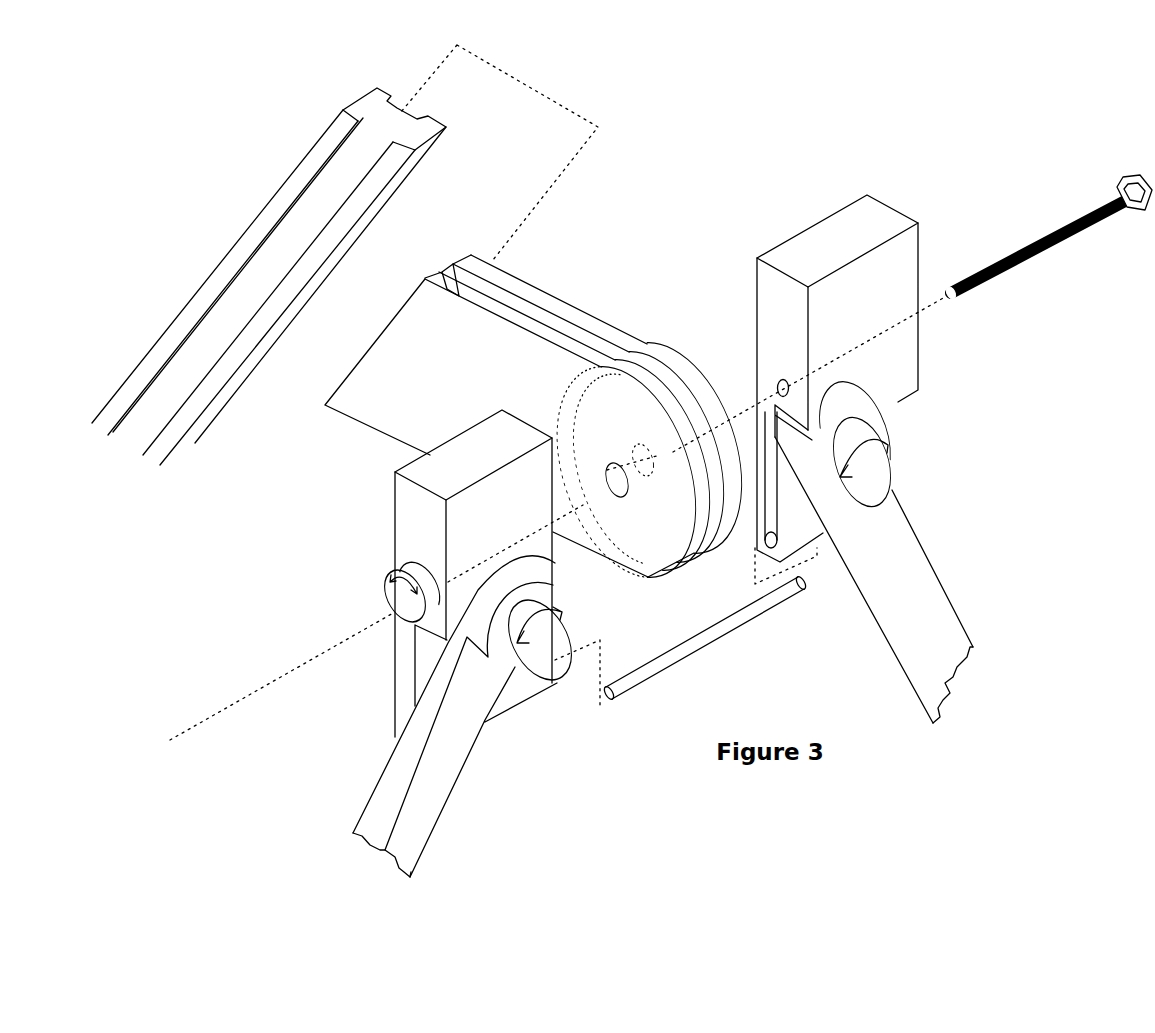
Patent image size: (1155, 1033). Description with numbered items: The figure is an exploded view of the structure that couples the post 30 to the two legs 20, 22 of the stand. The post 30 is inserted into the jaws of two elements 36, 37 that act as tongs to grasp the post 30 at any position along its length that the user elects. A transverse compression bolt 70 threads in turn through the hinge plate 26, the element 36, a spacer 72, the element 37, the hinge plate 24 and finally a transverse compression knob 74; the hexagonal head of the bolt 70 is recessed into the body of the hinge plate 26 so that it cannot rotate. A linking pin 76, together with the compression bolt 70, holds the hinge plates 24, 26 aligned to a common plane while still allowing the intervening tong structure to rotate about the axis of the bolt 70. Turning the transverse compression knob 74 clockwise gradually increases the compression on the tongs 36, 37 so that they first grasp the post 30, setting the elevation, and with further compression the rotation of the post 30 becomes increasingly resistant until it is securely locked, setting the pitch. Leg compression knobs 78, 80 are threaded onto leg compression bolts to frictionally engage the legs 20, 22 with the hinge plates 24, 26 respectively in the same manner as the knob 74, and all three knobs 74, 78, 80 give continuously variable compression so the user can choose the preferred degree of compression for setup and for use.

The leg 20 is at (408, 768).
The leg 22 is at (908, 567).
The hinge plate 24 is at (438, 482).
The hinge plate 26 is at (877, 225).
The post 30 is at (375, 102).
The element (tong) 36 is at (525, 290).
The element (tong) 37 is at (537, 342).
The transverse compression bolt 70 is at (1058, 255).
The spacer 72 is at (643, 381).
The transverse compression knob 74 is at (400, 603).
The linking pin 76 is at (733, 632).
The leg compression knob 78 is at (533, 655).
The leg compression knob 80 is at (880, 475).